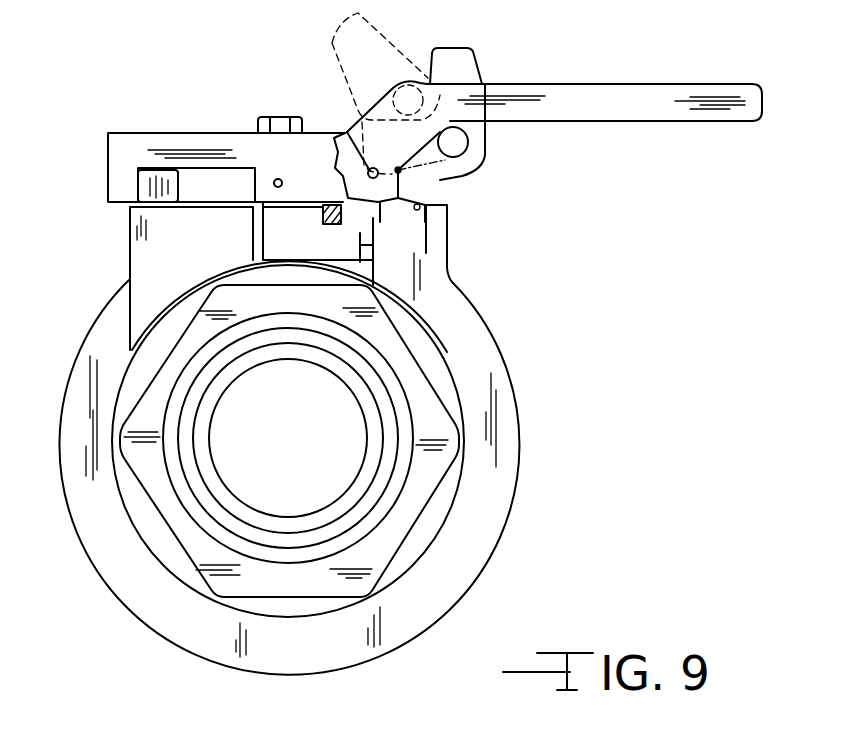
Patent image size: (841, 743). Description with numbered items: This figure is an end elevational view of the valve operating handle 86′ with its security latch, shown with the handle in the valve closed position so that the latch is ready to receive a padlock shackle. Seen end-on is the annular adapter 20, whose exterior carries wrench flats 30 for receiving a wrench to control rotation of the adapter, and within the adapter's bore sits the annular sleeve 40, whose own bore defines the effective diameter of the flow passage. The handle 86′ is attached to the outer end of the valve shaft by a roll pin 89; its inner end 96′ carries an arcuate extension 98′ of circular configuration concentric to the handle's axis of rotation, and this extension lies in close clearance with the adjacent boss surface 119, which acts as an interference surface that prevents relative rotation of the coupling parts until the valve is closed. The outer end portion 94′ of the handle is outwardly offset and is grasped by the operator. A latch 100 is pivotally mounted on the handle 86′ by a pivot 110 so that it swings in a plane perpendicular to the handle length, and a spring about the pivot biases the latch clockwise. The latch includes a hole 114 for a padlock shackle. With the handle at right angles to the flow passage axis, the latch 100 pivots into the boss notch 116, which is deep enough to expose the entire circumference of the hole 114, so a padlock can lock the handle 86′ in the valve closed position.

The adapter 20 is at (415, 503).
The wrench flats 30 is at (428, 380).
The annular sleeve 40 is at (207, 455).
The handle 86′ is at (677, 128).
The roll pin 89 is at (276, 179).
The handle outer end portion 94′ is at (630, 84).
The handle inner end 96′ is at (170, 147).
The arcuate extension 98′ is at (183, 190).
The latch 100 is at (463, 63).
The pivot 110 is at (347, 132).
The hole 114 is at (487, 158).
The notch 116 is at (355, 226).
The boss surface 119 is at (190, 203).